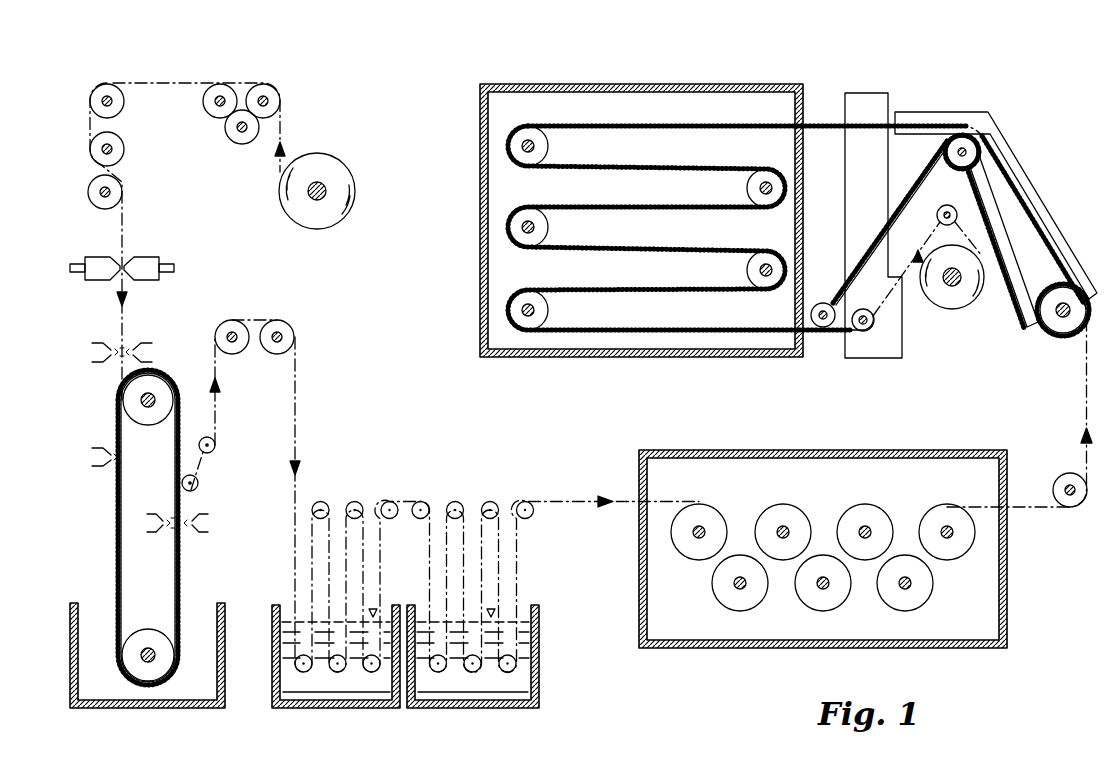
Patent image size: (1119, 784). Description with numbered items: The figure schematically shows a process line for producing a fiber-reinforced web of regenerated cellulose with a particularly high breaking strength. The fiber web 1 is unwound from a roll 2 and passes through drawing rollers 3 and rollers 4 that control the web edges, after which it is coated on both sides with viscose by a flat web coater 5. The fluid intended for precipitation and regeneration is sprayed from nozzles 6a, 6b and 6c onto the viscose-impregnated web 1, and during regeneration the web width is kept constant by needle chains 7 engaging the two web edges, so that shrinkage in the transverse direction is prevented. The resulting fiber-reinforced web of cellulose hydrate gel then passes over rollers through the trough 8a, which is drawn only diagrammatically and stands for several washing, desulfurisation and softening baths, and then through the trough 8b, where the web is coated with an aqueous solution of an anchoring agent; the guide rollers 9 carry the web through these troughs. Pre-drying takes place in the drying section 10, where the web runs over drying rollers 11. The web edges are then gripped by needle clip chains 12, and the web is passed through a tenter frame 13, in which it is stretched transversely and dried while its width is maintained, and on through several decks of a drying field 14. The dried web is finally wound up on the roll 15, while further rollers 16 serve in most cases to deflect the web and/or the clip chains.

The fiber web 1 is at (173, 82).
The roll 2 is at (350, 178).
The drawing rollers 3 is at (262, 84).
The rollers controlling the web edges 4 is at (120, 180).
The flat web coater 5 is at (142, 254).
The nozzle 6a is at (144, 336).
The nozzle 6b is at (104, 434).
The nozzle 6c is at (199, 550).
The needle chains 7 is at (179, 425).
The trough 8a is at (357, 694).
The trough 8b is at (496, 693).
The guide rollers 9 is at (274, 350).
The drying section 10 is at (735, 643).
The drying rollers 11 is at (793, 509).
The needle clip chains 12 is at (1012, 250).
The tenter frame 13 is at (1066, 248).
The drying field 14 is at (617, 362).
The roll 15 is at (952, 309).
The further rollers 16 is at (549, 146).